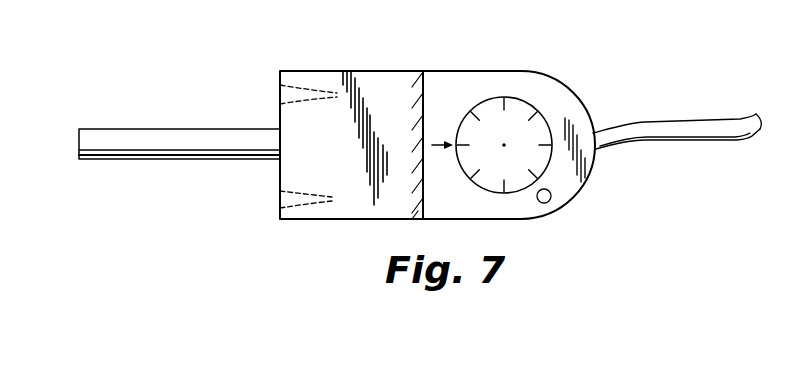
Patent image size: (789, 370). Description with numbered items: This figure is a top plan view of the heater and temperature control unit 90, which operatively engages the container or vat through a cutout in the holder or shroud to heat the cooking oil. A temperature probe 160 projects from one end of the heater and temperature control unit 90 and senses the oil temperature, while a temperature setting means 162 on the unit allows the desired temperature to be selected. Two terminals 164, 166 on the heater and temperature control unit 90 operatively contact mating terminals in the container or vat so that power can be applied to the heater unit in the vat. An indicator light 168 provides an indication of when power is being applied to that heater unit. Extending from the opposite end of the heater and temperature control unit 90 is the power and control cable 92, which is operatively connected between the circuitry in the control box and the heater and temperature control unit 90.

The heater and temperature control unit 90 is at (484, 58).
The power and control cable 92 is at (662, 127).
The temperature probe 160 is at (156, 146).
The temperature setting means 162 is at (542, 120).
The terminal 164 is at (279, 196).
The terminal 166 is at (279, 97).
The indicator light 168 is at (548, 202).